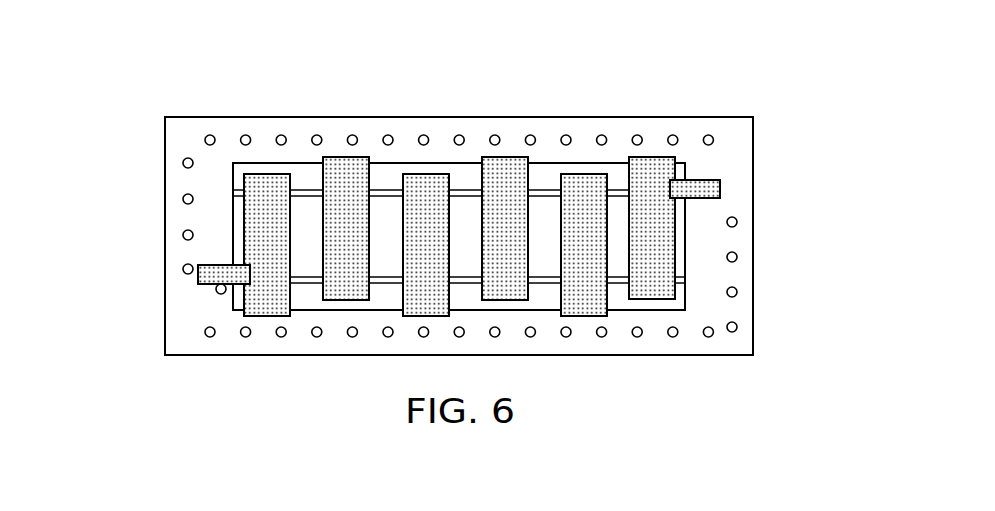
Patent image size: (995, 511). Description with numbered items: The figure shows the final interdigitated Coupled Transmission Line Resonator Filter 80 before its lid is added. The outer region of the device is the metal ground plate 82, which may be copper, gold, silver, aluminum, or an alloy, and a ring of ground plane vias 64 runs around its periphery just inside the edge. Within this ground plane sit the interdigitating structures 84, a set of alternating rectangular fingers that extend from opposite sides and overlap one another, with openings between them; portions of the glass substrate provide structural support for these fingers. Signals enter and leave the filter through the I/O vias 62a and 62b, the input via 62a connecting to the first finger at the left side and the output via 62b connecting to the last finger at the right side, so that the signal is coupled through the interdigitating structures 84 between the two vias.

The interdigitated Coupled Transmission Line Resonator Filter 80 is at (463, 246).
The metal ground plate 82 is at (620, 392).
The interdigitating structures 84 is at (410, 326).
The I/O via 62a is at (186, 284).
The I/O via 62b is at (791, 157).
The ground plane vias 64 is at (748, 270).